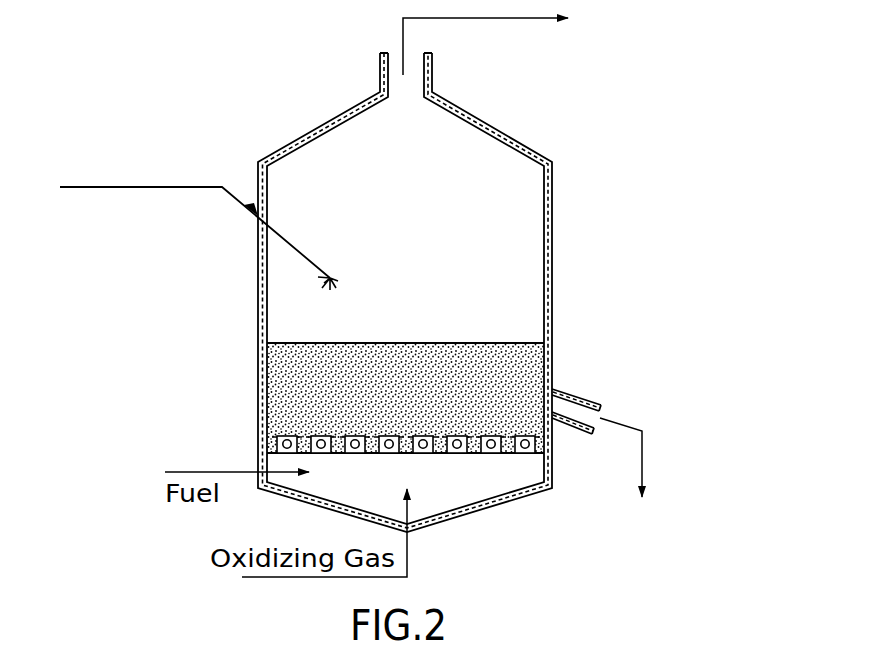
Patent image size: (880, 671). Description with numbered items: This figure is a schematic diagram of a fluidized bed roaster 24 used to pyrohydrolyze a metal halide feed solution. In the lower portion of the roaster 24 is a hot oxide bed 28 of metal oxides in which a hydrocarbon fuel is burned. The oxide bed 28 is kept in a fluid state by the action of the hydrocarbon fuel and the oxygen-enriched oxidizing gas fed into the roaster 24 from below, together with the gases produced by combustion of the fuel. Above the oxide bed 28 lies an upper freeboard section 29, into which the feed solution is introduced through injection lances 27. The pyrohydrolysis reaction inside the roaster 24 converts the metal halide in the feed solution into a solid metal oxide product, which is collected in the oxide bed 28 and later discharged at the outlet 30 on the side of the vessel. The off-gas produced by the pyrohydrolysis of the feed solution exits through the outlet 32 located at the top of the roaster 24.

The fluidized bed roaster 24 is at (311, 130).
The injection lances 27 is at (332, 272).
The oxide bed 28 is at (533, 375).
The freeboard section 29 is at (530, 265).
The outlet 30 is at (600, 416).
The outlet 32 is at (397, 52).